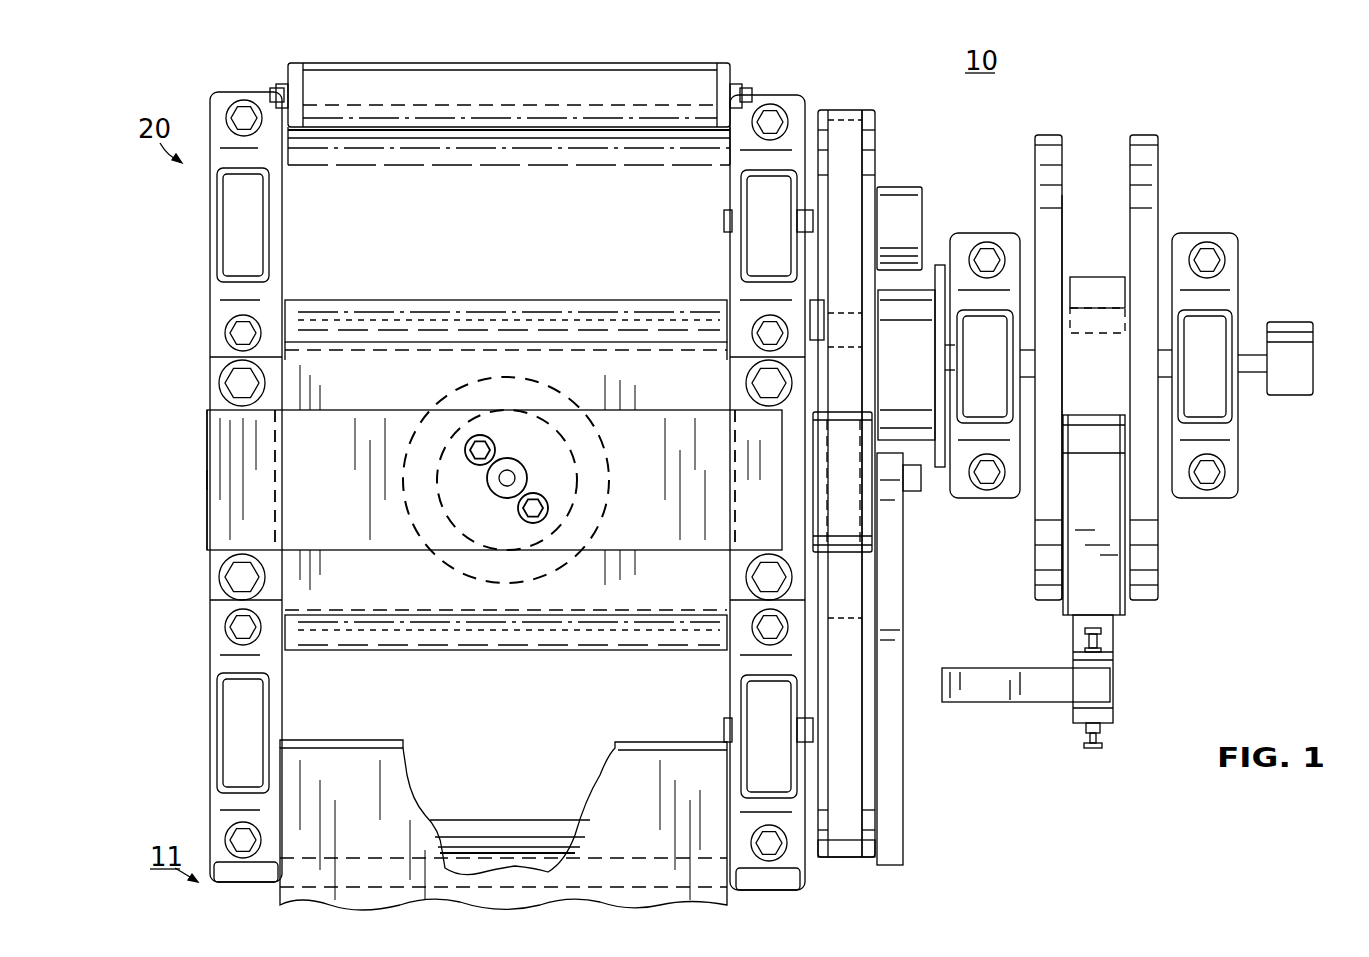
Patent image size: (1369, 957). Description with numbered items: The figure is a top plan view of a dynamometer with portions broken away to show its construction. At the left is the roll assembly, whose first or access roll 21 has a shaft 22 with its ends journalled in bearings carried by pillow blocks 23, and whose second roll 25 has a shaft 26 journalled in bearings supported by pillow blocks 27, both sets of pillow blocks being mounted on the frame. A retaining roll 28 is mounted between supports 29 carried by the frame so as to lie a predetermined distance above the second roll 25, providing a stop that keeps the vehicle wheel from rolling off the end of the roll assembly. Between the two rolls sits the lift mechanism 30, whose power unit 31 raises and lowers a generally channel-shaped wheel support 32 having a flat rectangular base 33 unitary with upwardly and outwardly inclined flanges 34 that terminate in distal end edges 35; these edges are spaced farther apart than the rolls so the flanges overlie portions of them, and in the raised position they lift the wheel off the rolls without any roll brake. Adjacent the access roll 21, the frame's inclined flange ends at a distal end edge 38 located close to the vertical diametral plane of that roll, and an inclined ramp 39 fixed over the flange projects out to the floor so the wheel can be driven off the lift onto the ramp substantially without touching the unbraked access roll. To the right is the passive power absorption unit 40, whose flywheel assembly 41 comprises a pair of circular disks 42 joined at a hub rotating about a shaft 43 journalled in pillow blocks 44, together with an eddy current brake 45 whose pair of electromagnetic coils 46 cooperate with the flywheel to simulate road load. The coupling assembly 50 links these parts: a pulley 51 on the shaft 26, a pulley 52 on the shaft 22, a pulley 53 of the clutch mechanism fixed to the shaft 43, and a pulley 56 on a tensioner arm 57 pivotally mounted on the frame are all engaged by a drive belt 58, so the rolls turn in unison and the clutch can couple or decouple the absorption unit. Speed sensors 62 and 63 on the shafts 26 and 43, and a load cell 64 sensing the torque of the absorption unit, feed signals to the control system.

The access roll 21 is at (588, 780).
The shaft 22 is at (804, 743).
The pillow blocks 23 is at (804, 864).
The second roll 25 is at (402, 326).
The shaft 26 is at (804, 241).
The pillow blocks 27 is at (222, 228).
The retaining roll 28 is at (610, 70).
The supports 29 is at (286, 94).
The lift mechanism 30 is at (188, 498).
The power unit 31 is at (600, 532).
The wheel support 32 is at (181, 444).
The base 33 is at (208, 478).
The flanges 34 is at (606, 346).
The distal end edges 35 is at (500, 340).
The distal end edge 38 is at (366, 740).
The inclined ramp 39 is at (280, 892).
The passive power absorption unit 40 is at (1166, 160).
The flywheel assembly 41 is at (1028, 196).
The circular disks 42 is at (1133, 198).
The shaft 43 is at (1010, 372).
The pillow blocks 44 is at (1236, 266).
The eddy current brake 45 is at (1104, 272).
The electromagnetic coils 46 is at (1104, 428).
The coupling assembly 50 is at (884, 118).
The pulley 51 is at (866, 166).
The pulley 52 is at (868, 858).
The pulley 53 is at (822, 380).
The pulley 56 is at (813, 494).
The tensioner arm 57 is at (903, 830).
The drive belt 58 is at (854, 110).
The speed sensor 62 is at (915, 220).
The speed sensor 63 is at (1292, 322).
The load cell 64 is at (1126, 626).